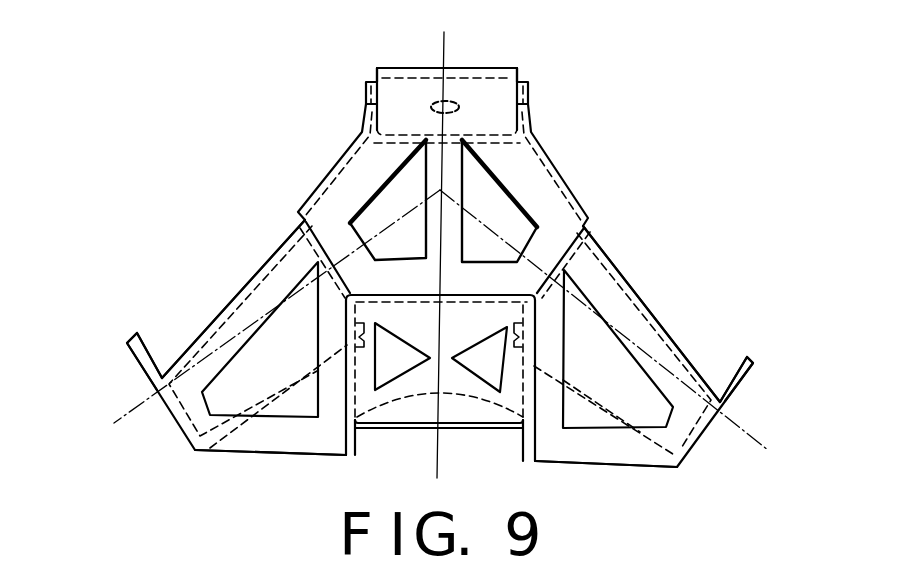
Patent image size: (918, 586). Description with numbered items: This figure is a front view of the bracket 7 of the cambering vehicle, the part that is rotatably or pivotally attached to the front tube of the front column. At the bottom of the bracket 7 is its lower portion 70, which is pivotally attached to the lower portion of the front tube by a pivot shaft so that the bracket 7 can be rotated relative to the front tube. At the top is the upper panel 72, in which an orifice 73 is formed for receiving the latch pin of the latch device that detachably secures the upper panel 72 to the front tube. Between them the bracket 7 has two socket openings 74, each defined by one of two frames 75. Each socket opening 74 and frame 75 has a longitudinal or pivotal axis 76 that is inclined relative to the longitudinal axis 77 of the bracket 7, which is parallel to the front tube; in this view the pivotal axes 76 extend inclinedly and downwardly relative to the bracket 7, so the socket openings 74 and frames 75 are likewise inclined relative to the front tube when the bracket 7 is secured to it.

The bracket 7 is at (463, 385).
The lower portion 70 is at (348, 455).
The upper panel 72 is at (498, 100).
The orifice 73 is at (440, 100).
The socket opening 74 is at (168, 347).
The frame 75 is at (128, 347).
The pivotal axis 76 is at (134, 418).
The longitudinal axis 77 is at (446, 45).